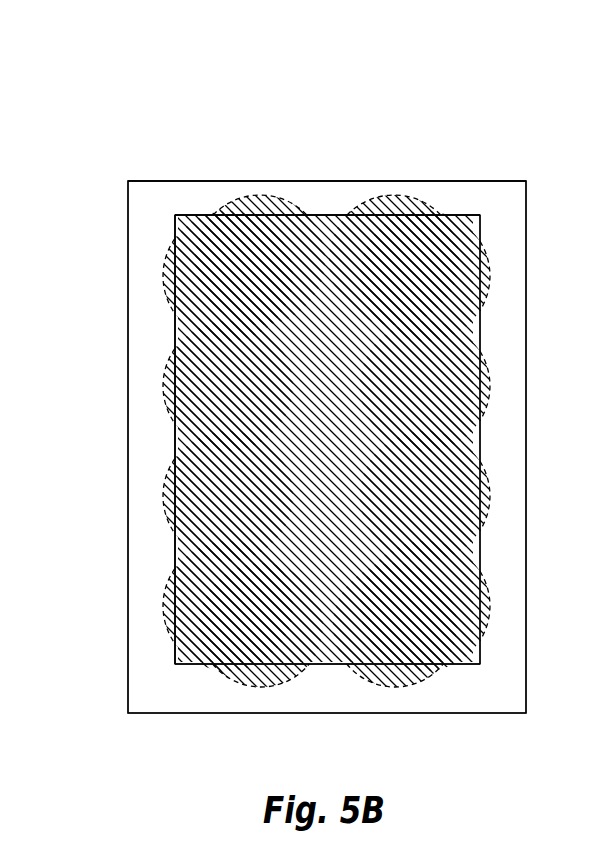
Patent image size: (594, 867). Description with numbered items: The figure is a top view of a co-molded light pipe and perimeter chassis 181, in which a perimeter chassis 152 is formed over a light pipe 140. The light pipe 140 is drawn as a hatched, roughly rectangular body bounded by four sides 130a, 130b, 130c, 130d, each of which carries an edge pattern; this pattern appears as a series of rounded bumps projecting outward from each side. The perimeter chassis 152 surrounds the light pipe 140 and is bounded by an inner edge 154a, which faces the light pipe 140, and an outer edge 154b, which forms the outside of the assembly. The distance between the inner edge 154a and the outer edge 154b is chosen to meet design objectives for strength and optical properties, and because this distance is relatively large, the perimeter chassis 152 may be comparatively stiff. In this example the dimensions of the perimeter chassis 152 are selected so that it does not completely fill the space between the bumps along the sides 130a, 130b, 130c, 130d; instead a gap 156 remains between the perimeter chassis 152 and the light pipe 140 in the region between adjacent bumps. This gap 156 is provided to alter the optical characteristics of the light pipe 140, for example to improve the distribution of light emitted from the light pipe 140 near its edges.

The co-molded light pipe and perimeter chassis 181 is at (172, 114).
The perimeter chassis 152 is at (475, 197).
The inner edge 154a is at (325, 215).
The outer edge 154b is at (235, 182).
The light pipe 140 is at (342, 450).
The side 130a is at (190, 215).
The side 130b is at (473, 222).
The side 130c is at (445, 667).
The side 130d is at (181, 652).
The gap 156 is at (182, 328).